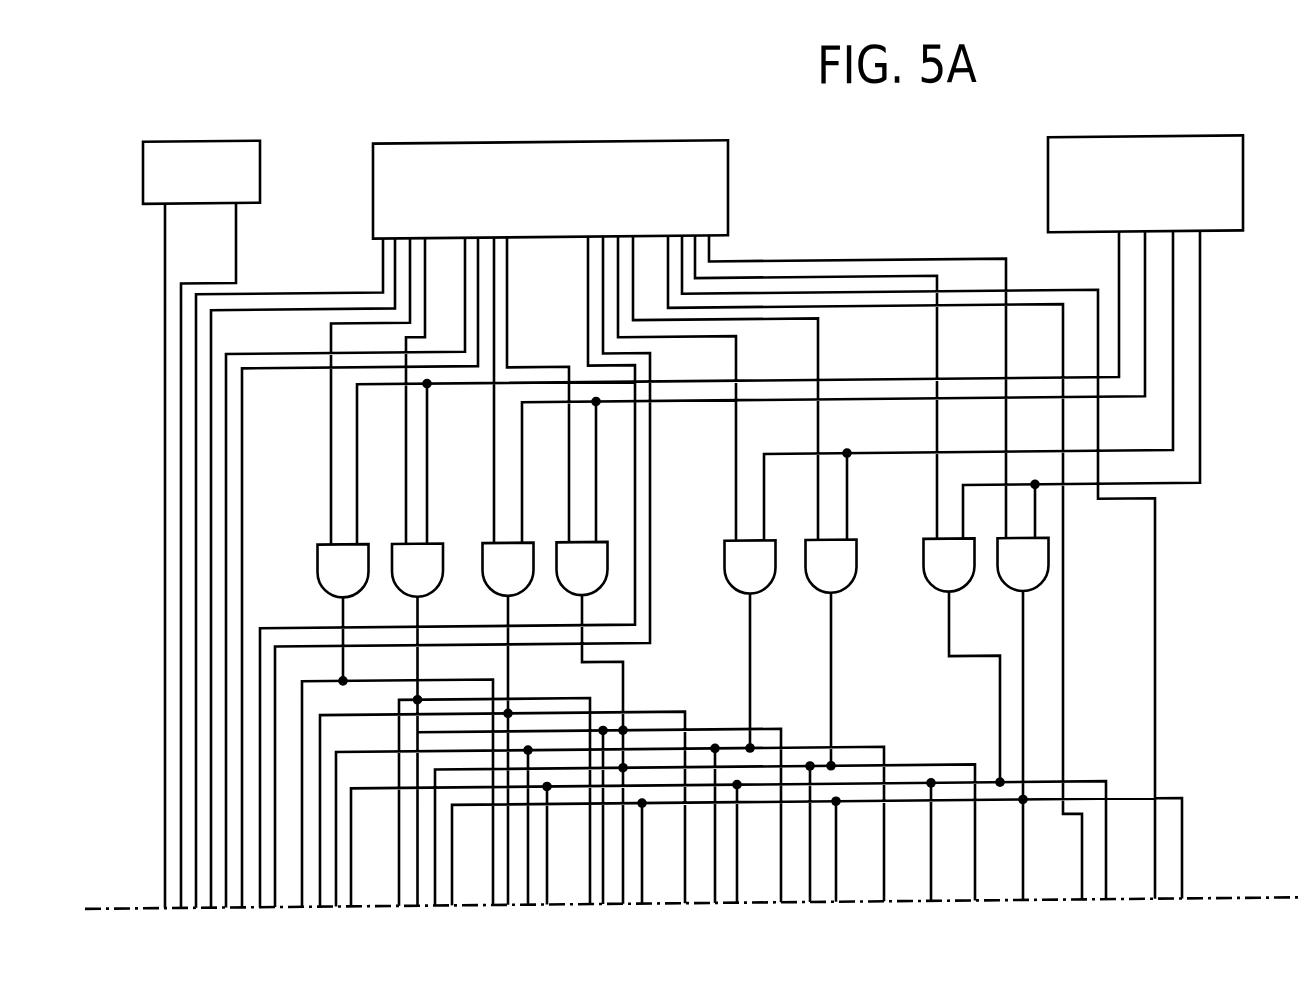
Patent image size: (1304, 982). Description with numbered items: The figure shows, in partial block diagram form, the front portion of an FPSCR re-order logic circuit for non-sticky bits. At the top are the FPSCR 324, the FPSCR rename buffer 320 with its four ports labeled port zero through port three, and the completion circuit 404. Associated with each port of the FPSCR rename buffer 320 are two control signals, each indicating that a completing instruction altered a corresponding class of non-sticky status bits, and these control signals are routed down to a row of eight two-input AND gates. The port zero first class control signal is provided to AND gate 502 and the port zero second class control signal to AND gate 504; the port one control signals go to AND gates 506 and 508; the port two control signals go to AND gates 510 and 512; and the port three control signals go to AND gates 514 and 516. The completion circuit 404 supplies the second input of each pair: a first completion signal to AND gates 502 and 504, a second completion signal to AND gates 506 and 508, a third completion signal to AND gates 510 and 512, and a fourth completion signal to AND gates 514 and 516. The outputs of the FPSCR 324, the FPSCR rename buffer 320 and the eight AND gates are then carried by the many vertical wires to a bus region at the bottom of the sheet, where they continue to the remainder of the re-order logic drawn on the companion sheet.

The FPSCR 324 is at (227, 138).
The FPSCR rename buffer 320 is at (645, 121).
The completion circuit 404 is at (1190, 123).
The AND gate 502 is at (320, 540).
The AND gate 504 is at (443, 540).
The AND gate 506 is at (482, 574).
The AND gate 508 is at (557, 576).
The AND gate 510 is at (722, 548).
The AND gate 512 is at (807, 582).
The AND gate 514 is at (920, 546).
The AND gate 516 is at (1003, 590).